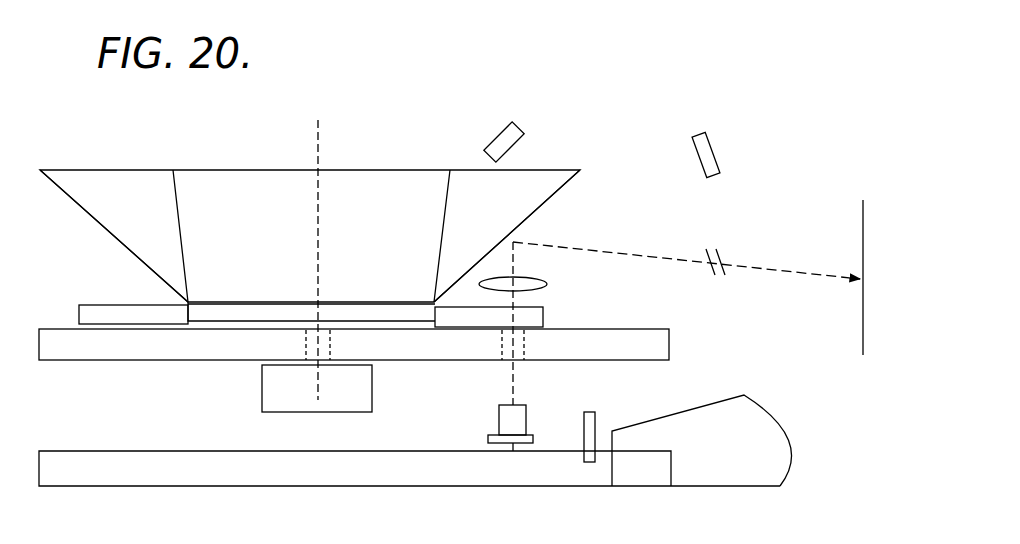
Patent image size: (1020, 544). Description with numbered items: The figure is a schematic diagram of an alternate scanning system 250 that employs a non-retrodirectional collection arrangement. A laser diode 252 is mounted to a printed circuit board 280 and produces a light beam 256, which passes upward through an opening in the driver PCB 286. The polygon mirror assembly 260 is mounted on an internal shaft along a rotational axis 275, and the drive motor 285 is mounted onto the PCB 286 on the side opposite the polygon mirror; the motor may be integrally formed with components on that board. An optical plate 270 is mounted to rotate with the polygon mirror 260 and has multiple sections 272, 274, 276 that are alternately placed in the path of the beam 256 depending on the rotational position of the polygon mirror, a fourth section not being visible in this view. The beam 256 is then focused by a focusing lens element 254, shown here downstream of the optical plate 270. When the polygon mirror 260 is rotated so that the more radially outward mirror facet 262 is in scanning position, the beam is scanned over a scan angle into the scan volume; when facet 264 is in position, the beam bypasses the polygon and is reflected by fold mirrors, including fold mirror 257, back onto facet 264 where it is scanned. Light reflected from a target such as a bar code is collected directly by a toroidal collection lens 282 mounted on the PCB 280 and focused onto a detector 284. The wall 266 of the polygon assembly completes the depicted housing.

The scanning system 250 is at (707, 82).
The laser diode 252 is at (499, 413).
The focusing lens element 254 is at (547, 284).
The light beam 256 is at (497, 137).
The fold mirror 257 is at (715, 152).
The polygon mirror assembly 260 is at (125, 168).
The mirror facet 262 is at (574, 173).
The mirror facet 264 is at (412, 178).
The outer wall 266 is at (100, 222).
The optical plate 270 is at (88, 303).
The plate section 272 is at (138, 310).
The plate section 274 is at (543, 315).
The rotational axis 275 is at (320, 147).
The plate section 276 is at (261, 308).
The printed circuit board 280 is at (99, 450).
The toroidal collection lens 282 is at (744, 395).
The detector 284 is at (597, 412).
The drive motor 285 is at (262, 393).
The driver PCB 286 is at (145, 362).